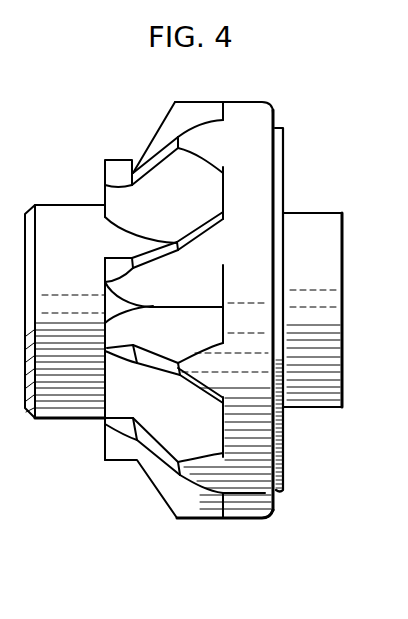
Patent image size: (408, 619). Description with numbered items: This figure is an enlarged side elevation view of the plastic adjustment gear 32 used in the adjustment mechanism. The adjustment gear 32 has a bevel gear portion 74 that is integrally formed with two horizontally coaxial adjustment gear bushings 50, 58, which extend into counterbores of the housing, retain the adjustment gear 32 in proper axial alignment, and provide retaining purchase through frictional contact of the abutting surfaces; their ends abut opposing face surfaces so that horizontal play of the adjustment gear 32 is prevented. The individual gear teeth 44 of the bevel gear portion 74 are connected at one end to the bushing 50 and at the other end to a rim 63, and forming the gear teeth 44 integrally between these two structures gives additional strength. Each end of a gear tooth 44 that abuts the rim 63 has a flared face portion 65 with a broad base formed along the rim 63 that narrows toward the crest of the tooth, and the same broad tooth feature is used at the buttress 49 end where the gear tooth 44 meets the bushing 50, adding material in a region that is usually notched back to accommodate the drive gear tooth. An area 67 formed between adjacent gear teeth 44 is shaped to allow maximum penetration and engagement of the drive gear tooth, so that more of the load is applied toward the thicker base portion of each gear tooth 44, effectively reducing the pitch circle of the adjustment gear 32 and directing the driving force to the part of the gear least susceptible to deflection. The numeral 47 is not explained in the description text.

The adjustment gear 32 is at (282, 80).
The upper cam tooth 47 is at (150, 165).
The area 67 is at (184, 196).
The rim 63 is at (254, 181).
The buttress 49 is at (120, 276).
The adjustment gear bushing 50 is at (67, 262).
The adjustment gear bushing 58 is at (315, 248).
The flared face portion 65 is at (205, 247).
The gear tooth 44 is at (167, 413).
The bevel gear portion 74 is at (237, 527).